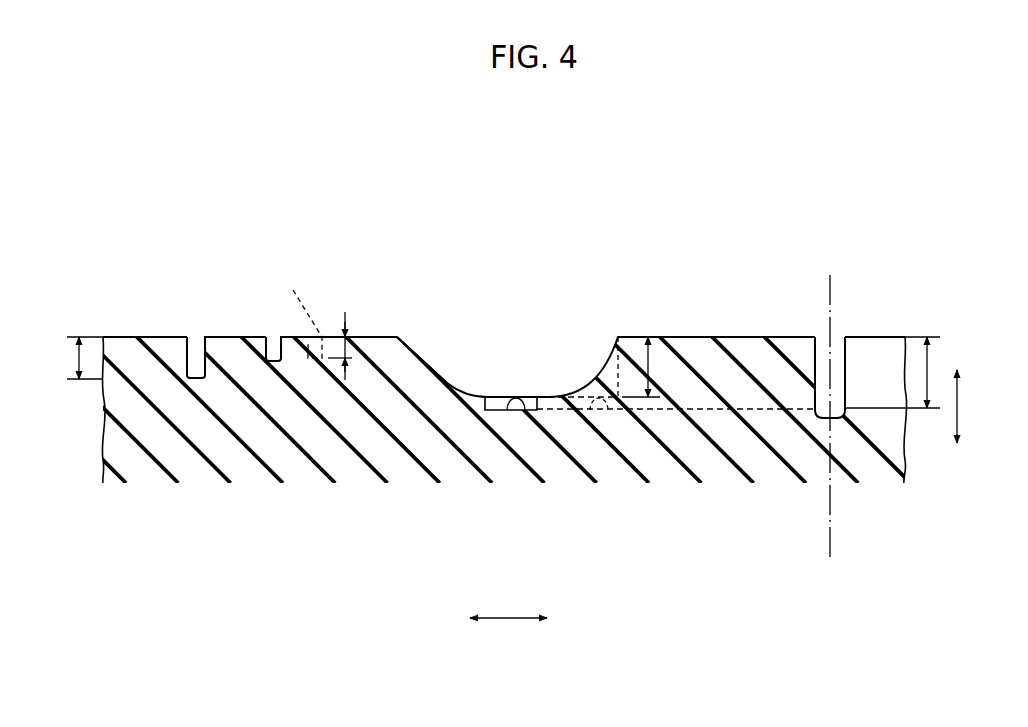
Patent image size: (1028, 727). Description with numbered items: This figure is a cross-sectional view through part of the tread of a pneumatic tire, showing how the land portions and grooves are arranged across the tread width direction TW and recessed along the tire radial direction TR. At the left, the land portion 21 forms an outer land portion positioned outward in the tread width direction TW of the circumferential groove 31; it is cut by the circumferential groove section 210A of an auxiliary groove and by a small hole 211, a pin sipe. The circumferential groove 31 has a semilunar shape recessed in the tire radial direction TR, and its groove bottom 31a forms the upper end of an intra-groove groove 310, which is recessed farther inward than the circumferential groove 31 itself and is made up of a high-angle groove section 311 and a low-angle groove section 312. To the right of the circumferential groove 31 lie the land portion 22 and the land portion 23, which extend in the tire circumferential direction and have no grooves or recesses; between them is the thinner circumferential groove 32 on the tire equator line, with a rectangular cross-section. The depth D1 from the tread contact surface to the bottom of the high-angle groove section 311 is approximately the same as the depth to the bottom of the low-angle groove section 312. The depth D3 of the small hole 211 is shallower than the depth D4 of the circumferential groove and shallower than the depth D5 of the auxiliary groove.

The land portion 21 is at (120, 334).
The circumferential groove section 210A is at (189, 337).
The small hole 211 is at (278, 337).
The land portion 22 is at (712, 333).
The land portion 23 is at (888, 333).
The circumferential groove 31 is at (538, 311).
The groove bottom 31a is at (447, 383).
The intra-groove groove 310 is at (650, 488).
The high-angle groove section 311 is at (521, 410).
The low-angle groove section 312 is at (598, 412).
The circumferential groove 32 is at (845, 330).
The depth D1 is at (930, 372).
The depth D3 is at (347, 337).
The depth D4 is at (655, 356).
The depth D5 is at (73, 358).
The tire radial direction TR is at (972, 406).
The tread width direction TW is at (508, 602).